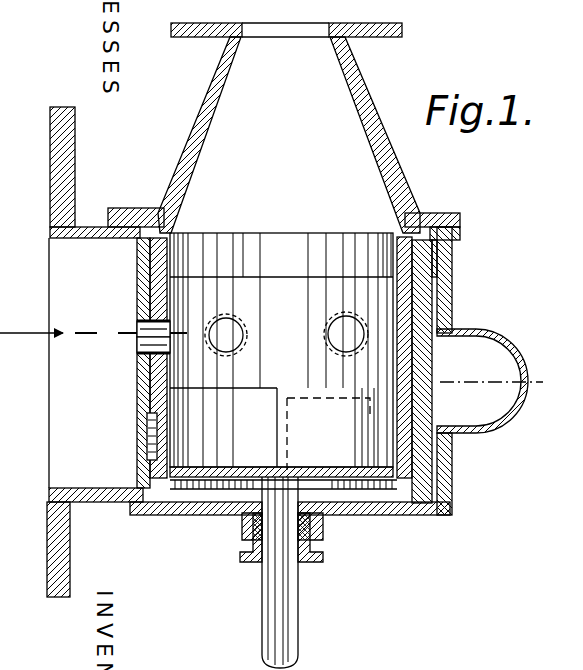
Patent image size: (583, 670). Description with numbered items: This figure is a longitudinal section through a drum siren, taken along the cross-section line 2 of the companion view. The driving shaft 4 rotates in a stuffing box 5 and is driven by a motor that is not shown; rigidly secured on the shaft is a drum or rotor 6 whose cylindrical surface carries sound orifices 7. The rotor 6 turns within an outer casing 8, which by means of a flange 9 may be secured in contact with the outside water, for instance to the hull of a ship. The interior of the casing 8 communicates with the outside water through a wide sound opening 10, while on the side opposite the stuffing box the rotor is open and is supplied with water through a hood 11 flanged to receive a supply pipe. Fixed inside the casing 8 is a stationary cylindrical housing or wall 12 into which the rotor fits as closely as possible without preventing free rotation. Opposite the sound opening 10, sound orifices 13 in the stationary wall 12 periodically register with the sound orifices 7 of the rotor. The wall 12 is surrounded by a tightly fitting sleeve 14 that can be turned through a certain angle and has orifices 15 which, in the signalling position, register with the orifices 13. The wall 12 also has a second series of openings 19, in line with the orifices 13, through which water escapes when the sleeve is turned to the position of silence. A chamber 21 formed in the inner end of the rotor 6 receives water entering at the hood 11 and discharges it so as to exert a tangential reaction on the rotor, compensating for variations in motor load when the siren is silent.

The cross-section line 2 is at (281, 374).
The driving shaft 4 is at (277, 608).
The stuffing box 5 is at (310, 547).
The drum or rotor 6 is at (283, 361).
The sound orifices 7 is at (337, 327).
The outer casing 8 is at (370, 512).
The flange 9 is at (77, 543).
The sound opening 10 is at (55, 402).
The hood 11 is at (287, 0).
The stationary cylindrical housing or wall 12 is at (137, 393).
The sound orifices 13 is at (138, 322).
The sleeve 14 is at (140, 442).
The orifices 15 is at (138, 343).
The openings 19 is at (182, 430).
The chamber 21 is at (328, 434).